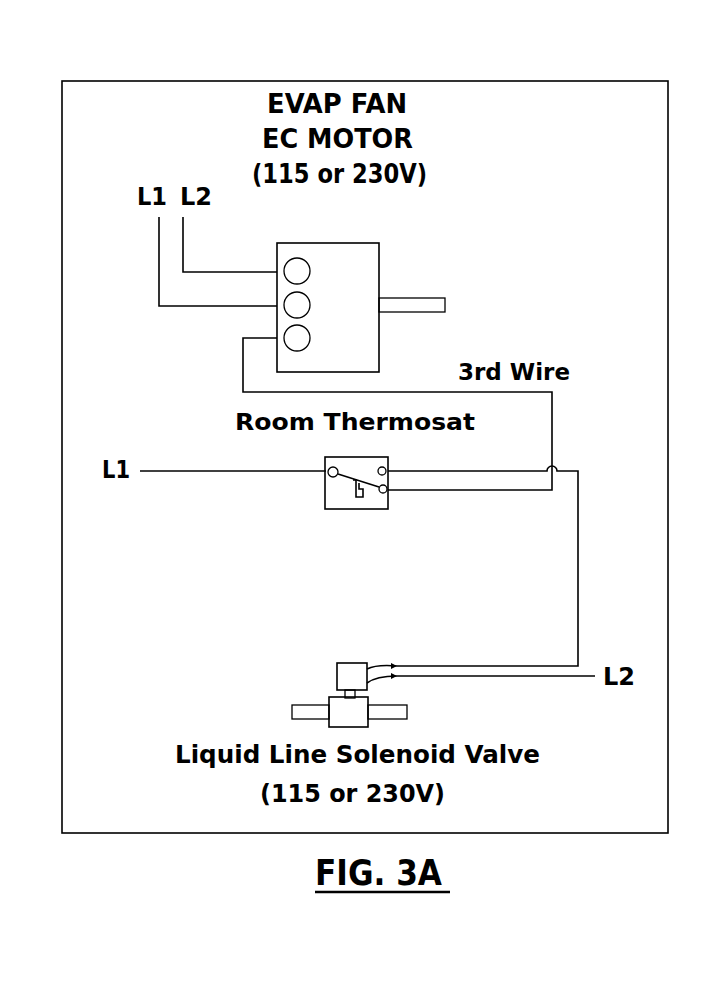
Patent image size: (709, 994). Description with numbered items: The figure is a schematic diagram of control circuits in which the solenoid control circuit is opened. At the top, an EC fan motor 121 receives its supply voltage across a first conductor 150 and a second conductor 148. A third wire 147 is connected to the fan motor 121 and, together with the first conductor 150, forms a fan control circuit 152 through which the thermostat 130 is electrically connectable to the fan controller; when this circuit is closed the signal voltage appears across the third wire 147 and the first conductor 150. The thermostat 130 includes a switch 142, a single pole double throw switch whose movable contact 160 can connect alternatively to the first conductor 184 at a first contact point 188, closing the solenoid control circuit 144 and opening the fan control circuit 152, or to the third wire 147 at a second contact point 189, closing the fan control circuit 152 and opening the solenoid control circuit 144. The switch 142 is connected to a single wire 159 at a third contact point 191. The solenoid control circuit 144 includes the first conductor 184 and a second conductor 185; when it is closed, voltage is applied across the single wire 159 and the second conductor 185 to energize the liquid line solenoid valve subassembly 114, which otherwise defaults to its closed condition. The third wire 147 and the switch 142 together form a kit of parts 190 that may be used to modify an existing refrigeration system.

The fan motor 121 is at (372, 257).
The second conductor 148 is at (183, 240).
The first conductor 150 is at (159, 265).
The fan control circuit 152 is at (190, 351).
The third wire 147 is at (243, 375).
The single wire 159 is at (162, 471).
The thermostat 130 is at (310, 485).
The contact 160 is at (331, 468).
The third contact point 191 is at (326, 498).
The switch 142 is at (345, 509).
The first contact point 188 is at (390, 460).
The second contact point 189 is at (375, 509).
The kit of parts 190 is at (400, 509).
The first conductor 184 is at (580, 497).
The solenoid control circuit 144 is at (588, 612).
The second conductor 185 is at (548, 676).
The liquid line solenoid valve subassembly 114 is at (320, 688).